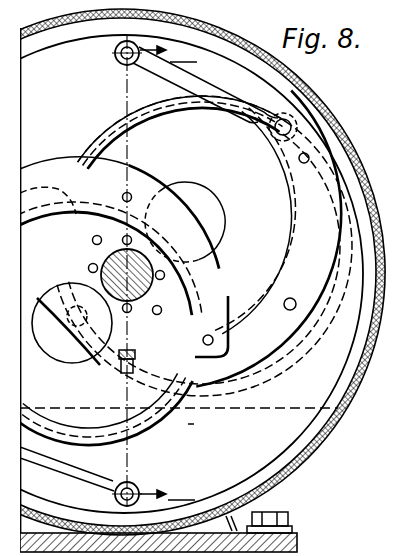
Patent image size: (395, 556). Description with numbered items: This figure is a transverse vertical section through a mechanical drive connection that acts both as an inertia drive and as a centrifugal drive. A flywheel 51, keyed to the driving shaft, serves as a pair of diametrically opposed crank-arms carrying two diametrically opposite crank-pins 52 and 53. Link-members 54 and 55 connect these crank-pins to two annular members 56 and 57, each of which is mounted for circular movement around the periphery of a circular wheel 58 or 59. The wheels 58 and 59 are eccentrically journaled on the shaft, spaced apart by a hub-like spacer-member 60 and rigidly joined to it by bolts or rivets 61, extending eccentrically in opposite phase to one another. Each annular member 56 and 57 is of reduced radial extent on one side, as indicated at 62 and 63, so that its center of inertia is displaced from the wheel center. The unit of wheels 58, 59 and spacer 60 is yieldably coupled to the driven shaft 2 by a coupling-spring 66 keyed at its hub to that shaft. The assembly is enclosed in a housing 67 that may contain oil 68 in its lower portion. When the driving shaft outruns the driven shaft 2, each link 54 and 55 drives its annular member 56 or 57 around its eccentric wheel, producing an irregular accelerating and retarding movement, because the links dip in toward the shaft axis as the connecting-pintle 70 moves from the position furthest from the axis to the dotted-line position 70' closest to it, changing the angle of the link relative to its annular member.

The flywheel 51 is at (332, 384).
The housing 67 is at (318, 99).
The crank-pin 52 is at (116, 59).
The crank-pin 53 is at (133, 486).
The link-member 54 is at (212, 93).
The link-member 55 is at (69, 467).
The connecting-pintle 70 is at (275, 122).
The dotted-line position of connecting-pintle 70' is at (72, 324).
The reduced radial extent portion 62 is at (101, 133).
The annular member 57 is at (45, 169).
The circular wheel 58 is at (268, 231).
The circular wheel 59 is at (77, 391).
The hub-like spacer-member 60 is at (182, 311).
The bolts or rivets 61 is at (90, 268).
The driven shaft 2 is at (150, 311).
The reduced radial extent portion 63 is at (143, 420).
The coupling-spring 66 is at (136, 355).
The oil 68 is at (271, 408).
The annular member 56 is at (318, 290).